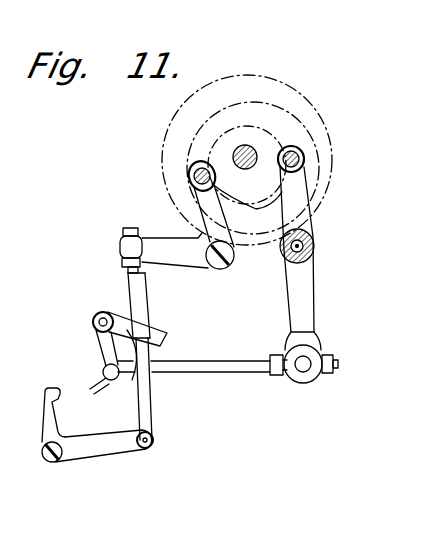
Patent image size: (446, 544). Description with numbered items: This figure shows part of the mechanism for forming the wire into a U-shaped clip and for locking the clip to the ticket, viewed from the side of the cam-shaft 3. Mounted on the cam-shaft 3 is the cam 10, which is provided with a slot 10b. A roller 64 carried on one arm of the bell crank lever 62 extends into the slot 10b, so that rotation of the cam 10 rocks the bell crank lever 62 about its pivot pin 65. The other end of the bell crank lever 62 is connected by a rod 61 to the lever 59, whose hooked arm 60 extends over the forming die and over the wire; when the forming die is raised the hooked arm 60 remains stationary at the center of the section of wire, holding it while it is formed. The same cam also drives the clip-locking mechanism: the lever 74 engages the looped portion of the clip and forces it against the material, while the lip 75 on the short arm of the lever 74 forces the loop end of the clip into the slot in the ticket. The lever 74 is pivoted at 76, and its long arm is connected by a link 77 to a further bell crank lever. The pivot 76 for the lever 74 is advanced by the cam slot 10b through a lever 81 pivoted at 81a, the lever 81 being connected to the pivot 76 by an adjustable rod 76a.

The cam-shaft 3 is at (248, 148).
The cam 10 is at (229, 67).
The slot in the cam 10b is at (260, 117).
The lever 59 is at (91, 452).
The hooked arm 60 is at (47, 410).
The rod 61 is at (149, 415).
The bell crank lever 62 is at (186, 259).
The roller 64 is at (193, 183).
The pivot pin 65 is at (234, 262).
The lever 74 is at (153, 353).
The lip 75 is at (86, 391).
The pivot 76 is at (112, 381).
The adjustable rod 76a is at (246, 352).
The link 77 is at (166, 337).
The lever 81 is at (310, 302).
The pivot 81a is at (313, 241).